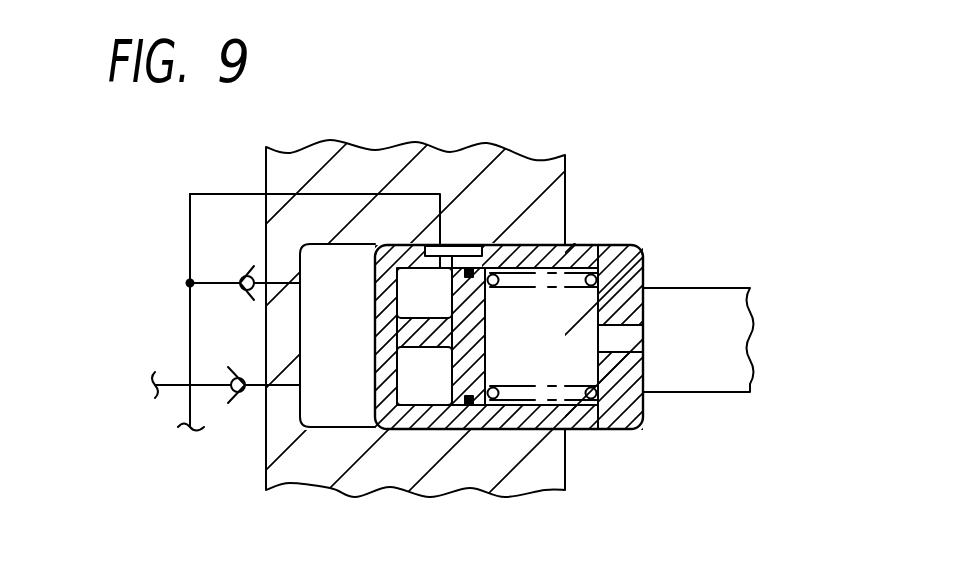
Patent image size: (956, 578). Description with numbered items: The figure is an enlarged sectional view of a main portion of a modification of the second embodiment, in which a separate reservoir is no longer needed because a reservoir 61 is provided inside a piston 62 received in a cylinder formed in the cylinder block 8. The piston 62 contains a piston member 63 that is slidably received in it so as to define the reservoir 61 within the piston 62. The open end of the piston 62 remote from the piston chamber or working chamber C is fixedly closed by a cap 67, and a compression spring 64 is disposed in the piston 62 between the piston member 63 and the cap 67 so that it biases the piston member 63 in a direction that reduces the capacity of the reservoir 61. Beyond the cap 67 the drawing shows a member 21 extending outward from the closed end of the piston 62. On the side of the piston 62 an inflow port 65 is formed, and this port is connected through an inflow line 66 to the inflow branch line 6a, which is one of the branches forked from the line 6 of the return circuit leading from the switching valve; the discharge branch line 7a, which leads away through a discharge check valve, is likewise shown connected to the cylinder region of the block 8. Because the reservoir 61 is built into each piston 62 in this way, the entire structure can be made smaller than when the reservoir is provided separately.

The cylinder block 8 is at (543, 470).
The inflow line 66 is at (228, 193).
The line 6 is at (190, 322).
The inflow branch line 6a is at (222, 283).
The discharge branch line 7a is at (222, 385).
The working chamber C is at (335, 407).
The piston 62 is at (594, 238).
The inflow port 65 is at (468, 245).
The reservoir 61 is at (423, 390).
The piston member 63 is at (447, 340).
The compression spring 64 is at (643, 278).
The cap 67 is at (632, 420).
The rod 21 is at (727, 308).